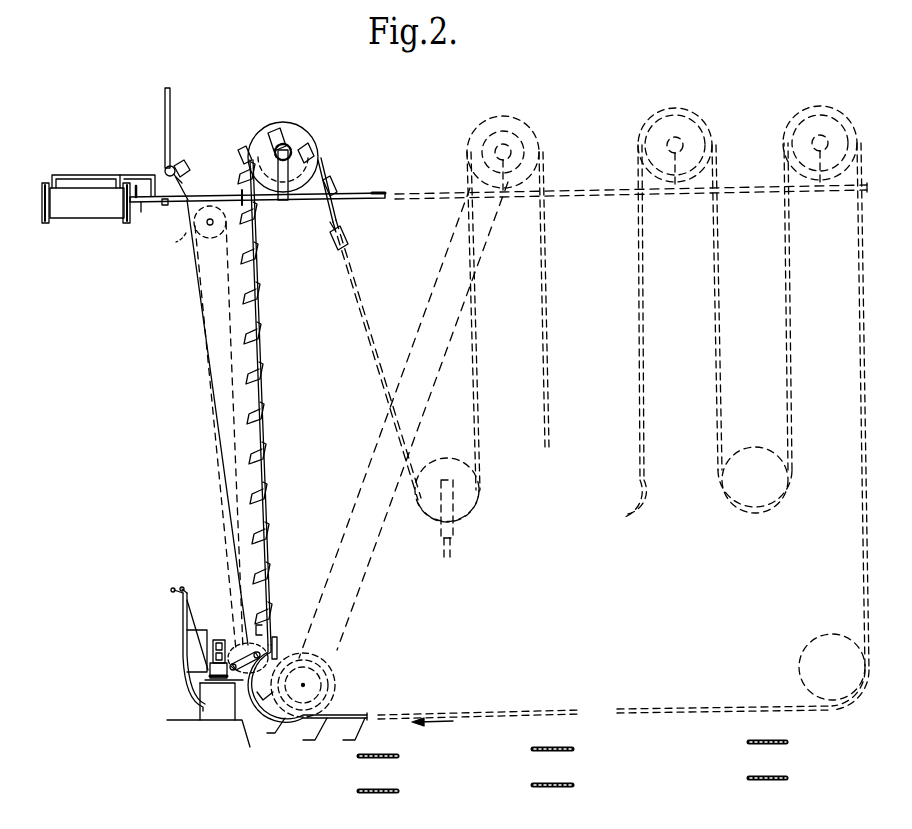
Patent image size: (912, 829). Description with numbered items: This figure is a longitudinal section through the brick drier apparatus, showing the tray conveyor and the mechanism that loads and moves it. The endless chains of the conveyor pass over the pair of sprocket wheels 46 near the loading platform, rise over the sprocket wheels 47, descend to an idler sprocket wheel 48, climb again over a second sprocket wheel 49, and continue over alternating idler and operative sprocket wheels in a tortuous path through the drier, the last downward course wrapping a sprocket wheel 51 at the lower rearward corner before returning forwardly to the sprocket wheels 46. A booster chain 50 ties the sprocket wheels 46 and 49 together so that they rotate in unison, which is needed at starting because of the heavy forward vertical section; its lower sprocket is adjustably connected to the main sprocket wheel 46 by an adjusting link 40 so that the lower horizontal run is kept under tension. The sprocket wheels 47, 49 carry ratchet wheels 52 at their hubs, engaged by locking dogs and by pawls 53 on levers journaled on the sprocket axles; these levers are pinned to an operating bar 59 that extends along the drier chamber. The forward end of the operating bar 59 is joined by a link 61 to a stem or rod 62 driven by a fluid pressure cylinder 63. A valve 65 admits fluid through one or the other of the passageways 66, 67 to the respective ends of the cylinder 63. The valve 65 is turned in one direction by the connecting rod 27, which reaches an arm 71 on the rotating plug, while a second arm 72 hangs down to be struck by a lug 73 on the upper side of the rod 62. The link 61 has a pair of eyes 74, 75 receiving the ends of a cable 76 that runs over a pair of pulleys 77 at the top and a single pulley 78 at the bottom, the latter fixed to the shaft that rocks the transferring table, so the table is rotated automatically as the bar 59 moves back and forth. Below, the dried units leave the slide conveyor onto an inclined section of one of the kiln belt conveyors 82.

The rod 27 is at (197, 268).
The adjusting link 40 is at (330, 690).
The sprocket wheels 46 is at (330, 668).
The sprocket wheels 47 is at (303, 129).
The idler sprocket wheel 48 is at (437, 460).
The second sprocket wheel 49 is at (517, 138).
The booster chain 50 is at (375, 553).
The sprocket wheel 51 is at (809, 645).
The ratchet wheels 52 is at (291, 152).
The pawls 53 is at (257, 140).
The operating bar 59 is at (376, 191).
The link 61 is at (210, 196).
The stem or rod 62 is at (141, 207).
The fluid pressure cylinder 63 is at (72, 213).
The valve 65 is at (166, 168).
The passageway 66 is at (61, 175).
The passageway 67 is at (118, 177).
The arm 71 is at (178, 166).
The second arm 72 is at (184, 173).
The lug 73 is at (138, 190).
The eye 74 is at (165, 205).
The eye 75 is at (242, 195).
The cable 76 is at (197, 253).
The pulleys 77 is at (182, 239).
The pulley 78 is at (238, 628).
The belt conveyors 82 is at (397, 756).